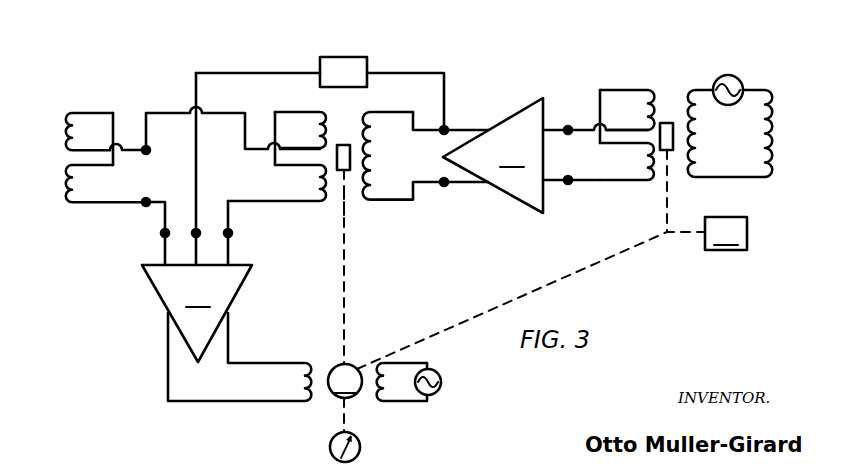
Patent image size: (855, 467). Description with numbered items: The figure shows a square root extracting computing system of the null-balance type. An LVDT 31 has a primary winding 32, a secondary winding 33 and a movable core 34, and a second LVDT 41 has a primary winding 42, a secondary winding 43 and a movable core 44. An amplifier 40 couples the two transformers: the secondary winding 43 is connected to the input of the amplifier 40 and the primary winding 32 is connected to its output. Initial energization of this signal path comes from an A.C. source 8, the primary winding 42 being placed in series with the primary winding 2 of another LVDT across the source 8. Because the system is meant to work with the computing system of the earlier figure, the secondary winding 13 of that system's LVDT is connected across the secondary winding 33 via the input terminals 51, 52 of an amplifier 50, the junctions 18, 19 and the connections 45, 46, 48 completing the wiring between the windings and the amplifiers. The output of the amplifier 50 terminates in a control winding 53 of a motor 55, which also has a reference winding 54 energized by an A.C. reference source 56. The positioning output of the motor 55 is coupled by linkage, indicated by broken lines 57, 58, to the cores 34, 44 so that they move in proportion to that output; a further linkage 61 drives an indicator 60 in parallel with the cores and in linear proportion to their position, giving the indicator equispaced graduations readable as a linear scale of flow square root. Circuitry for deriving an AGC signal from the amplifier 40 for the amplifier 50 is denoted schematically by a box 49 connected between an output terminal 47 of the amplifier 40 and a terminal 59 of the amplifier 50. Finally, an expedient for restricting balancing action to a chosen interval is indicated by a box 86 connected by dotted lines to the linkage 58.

The primary winding 2 is at (776, 102).
The A.C. source 8 is at (738, 77).
The secondary winding 13 is at (64, 128).
The junction 18 is at (146, 148).
The junction 19 is at (146, 203).
The LVDT 31 is at (353, 196).
The primary winding 32 is at (367, 135).
The secondary winding 33 is at (320, 178).
The movable core 34 is at (347, 143).
The amplifier 40 is at (493, 155).
The LVDT 41 is at (671, 175).
The primary winding 42 is at (690, 96).
The secondary winding 43 is at (648, 90).
The movable core 44 is at (667, 122).
The junction 45 is at (568, 128).
The junction 46 is at (568, 182).
The output terminal 47 is at (445, 129).
The junction 48 is at (446, 183).
The AGC circuitry box 49 is at (320, 93).
The amplifier 50 is at (197, 313).
The input terminal 51 is at (165, 233).
The input terminal 52 is at (229, 234).
The control winding 53 is at (315, 362).
The reference winding 54 is at (376, 390).
The motor 55 is at (345, 381).
The A.C. reference source 56 is at (437, 394).
The linkage 57 is at (343, 280).
The linkage 58 is at (530, 295).
The terminal 59 is at (197, 232).
The indicator 60 is at (360, 452).
The linkage 61 is at (343, 427).
The box 86 is at (726, 233).